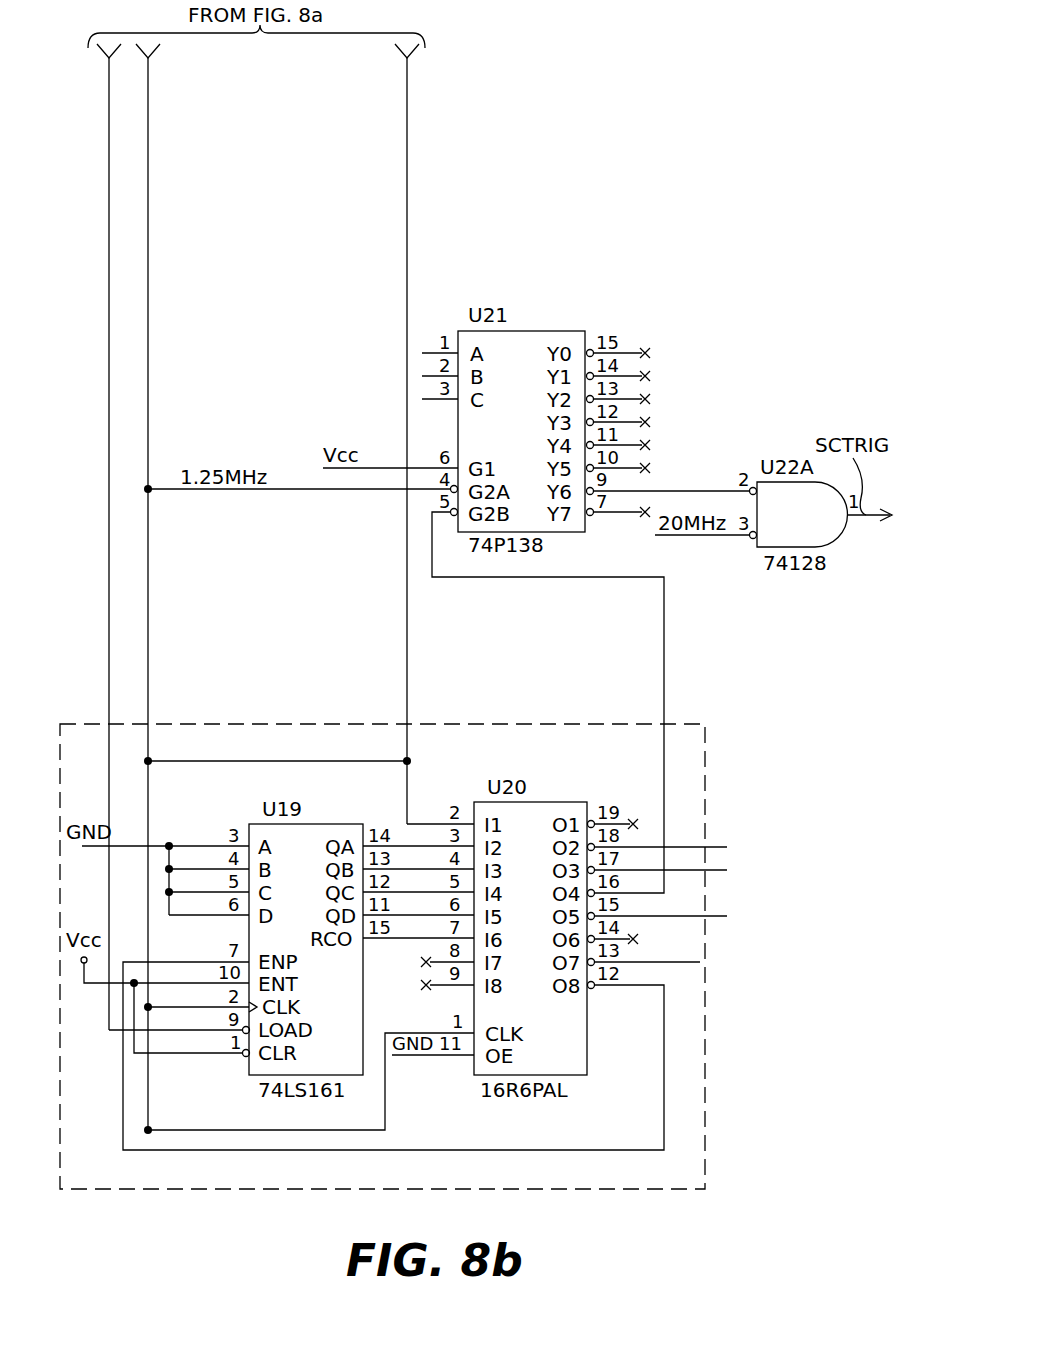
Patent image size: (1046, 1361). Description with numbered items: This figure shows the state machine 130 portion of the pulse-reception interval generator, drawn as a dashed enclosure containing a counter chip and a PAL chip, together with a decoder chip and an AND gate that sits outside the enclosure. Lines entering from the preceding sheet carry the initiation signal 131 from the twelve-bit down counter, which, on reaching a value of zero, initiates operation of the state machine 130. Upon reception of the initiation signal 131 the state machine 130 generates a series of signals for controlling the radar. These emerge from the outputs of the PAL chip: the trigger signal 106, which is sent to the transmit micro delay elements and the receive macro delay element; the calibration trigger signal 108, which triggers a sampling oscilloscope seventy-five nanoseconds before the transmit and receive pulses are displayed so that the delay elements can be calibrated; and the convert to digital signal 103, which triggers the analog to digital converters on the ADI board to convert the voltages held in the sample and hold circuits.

The initiation signal 131 is at (408, 118).
The state machine 130 is at (608, 1189).
The trigger signal 106 is at (727, 847).
The calibration trigger signal 108 is at (727, 870).
The convert to digital signal 103 is at (727, 916).